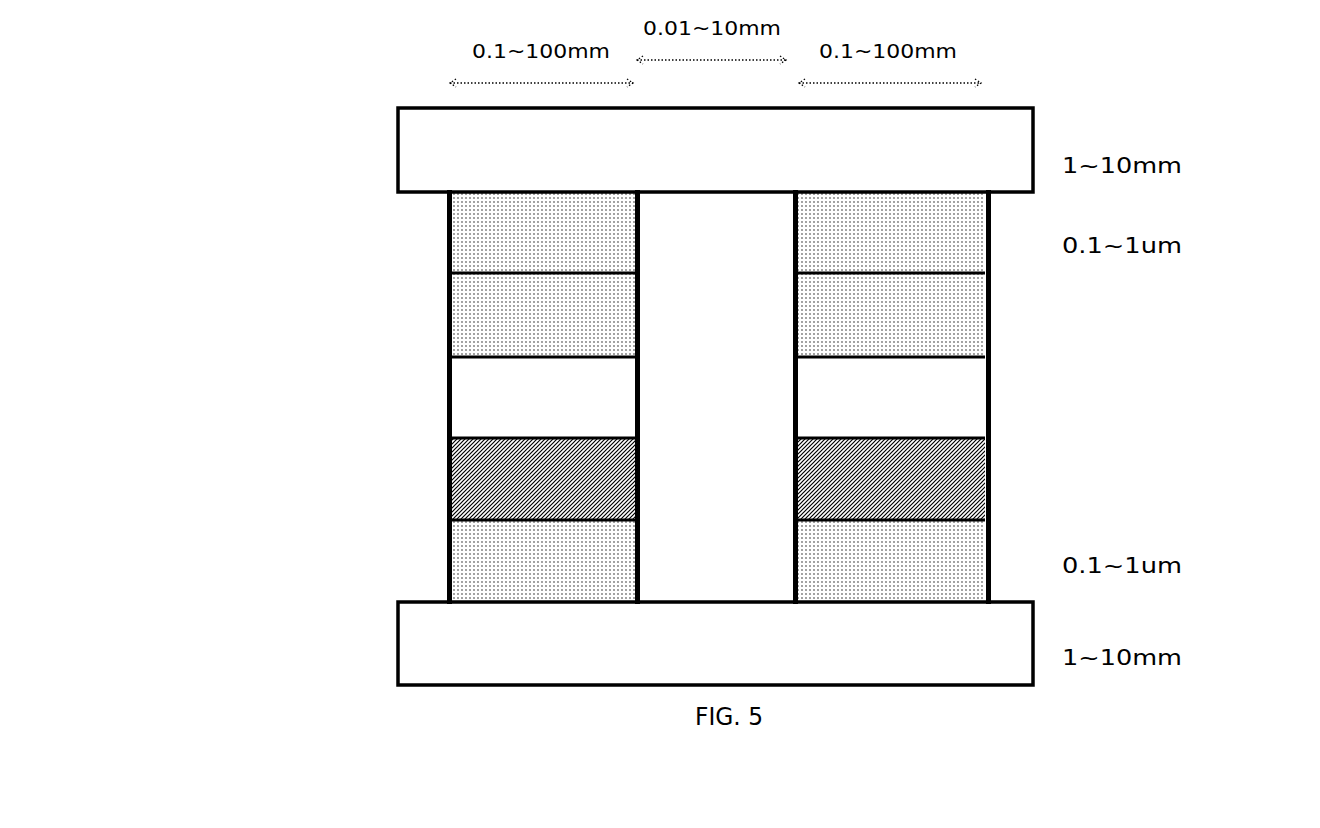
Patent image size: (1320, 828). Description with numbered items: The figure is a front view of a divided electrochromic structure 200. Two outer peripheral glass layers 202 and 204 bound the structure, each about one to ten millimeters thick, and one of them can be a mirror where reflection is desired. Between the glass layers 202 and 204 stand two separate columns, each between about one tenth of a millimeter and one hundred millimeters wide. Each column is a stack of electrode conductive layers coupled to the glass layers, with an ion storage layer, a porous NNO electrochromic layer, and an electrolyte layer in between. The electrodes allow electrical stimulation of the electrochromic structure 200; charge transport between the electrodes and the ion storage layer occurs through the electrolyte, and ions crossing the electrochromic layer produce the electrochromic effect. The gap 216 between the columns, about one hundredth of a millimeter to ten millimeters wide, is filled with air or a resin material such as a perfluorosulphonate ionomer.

The electrochromic structure 200 is at (268, 120).
The glass layer 202 is at (430, 138).
The glass layer 204 is at (425, 663).
The air / resin polymer gap 216 is at (740, 250).